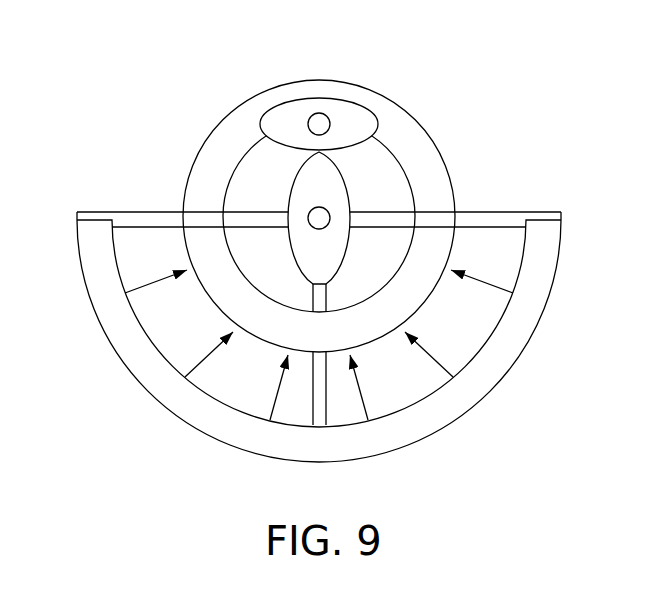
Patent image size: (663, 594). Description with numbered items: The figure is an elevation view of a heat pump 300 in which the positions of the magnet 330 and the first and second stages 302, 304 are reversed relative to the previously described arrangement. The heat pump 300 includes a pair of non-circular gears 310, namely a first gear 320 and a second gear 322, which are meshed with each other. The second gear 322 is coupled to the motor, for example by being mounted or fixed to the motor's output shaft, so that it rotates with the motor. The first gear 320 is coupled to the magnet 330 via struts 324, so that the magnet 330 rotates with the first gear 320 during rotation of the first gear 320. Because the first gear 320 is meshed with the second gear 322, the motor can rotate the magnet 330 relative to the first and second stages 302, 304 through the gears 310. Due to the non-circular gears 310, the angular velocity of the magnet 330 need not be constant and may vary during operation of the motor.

The heat pump 300 is at (138, 82).
The first stage 302 is at (388, 122).
The second stage 304 is at (232, 302).
The non-circular gears 310 is at (288, 182).
The first gear 320 is at (325, 190).
The second gear 322 is at (285, 122).
The struts 324 is at (491, 218).
The magnet 330 is at (530, 292).